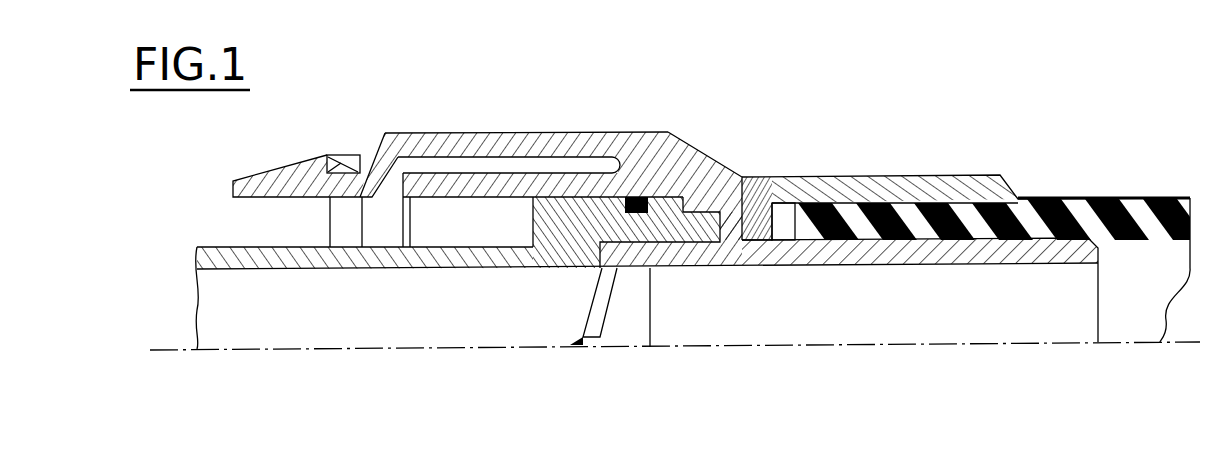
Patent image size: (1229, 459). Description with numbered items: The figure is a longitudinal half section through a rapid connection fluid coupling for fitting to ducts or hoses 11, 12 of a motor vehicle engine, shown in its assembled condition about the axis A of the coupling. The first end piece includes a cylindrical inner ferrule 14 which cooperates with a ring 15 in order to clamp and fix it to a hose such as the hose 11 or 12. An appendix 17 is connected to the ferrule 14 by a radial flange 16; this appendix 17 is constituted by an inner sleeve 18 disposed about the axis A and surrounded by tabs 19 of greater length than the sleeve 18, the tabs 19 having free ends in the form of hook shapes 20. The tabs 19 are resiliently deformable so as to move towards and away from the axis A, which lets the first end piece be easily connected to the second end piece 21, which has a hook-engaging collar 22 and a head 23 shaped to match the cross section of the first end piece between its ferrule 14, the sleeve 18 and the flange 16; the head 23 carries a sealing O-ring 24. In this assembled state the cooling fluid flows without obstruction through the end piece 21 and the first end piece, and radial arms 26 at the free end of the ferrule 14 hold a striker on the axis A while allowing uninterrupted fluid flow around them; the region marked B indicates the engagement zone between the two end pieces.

The hose 11 is at (1001, 224).
The hose 12 is at (1070, 200).
The cylindrical inner ferrule 14 is at (925, 263).
The ring 15 is at (882, 177).
The radial flange 16 is at (732, 222).
The appendix 17 is at (573, 132).
The inner sleeve 18 is at (472, 187).
The tabs 19 is at (410, 133).
The hook shapes 20 is at (367, 152).
The end piece 21 is at (307, 272).
The hook-engaging collar 22 is at (333, 215).
The head 23 is at (553, 267).
The sealing O-ring 24 is at (670, 162).
The radial arms 26 is at (600, 295).
The engagement region B is at (737, 167).
The axis A is at (1005, 342).